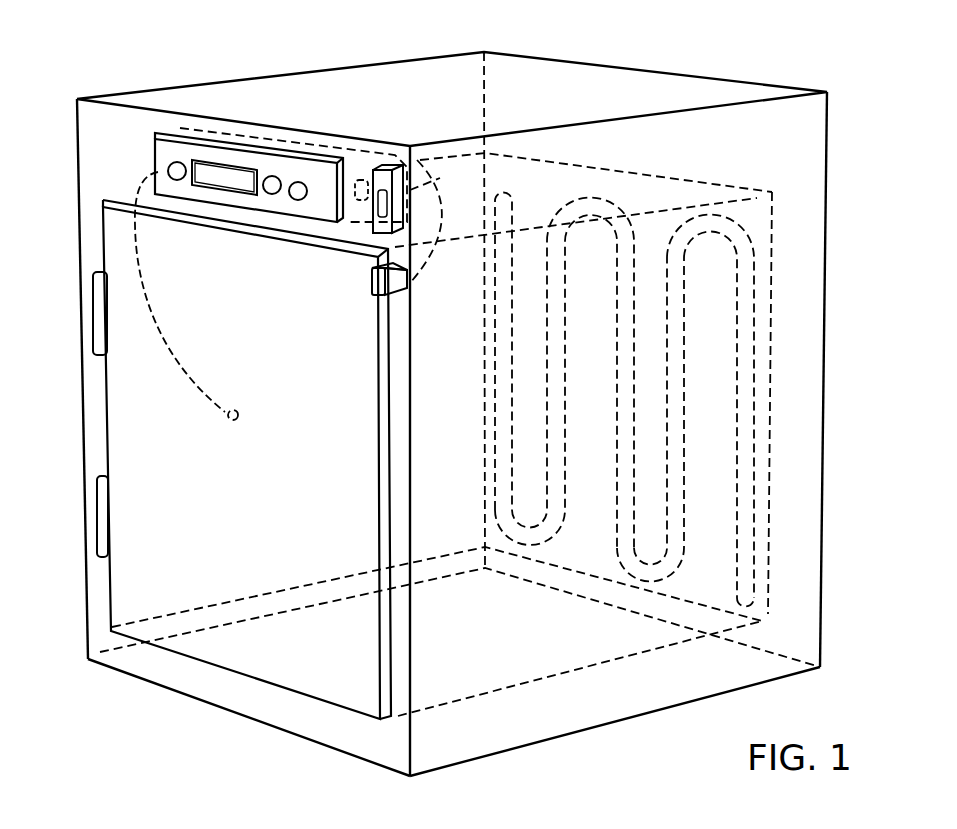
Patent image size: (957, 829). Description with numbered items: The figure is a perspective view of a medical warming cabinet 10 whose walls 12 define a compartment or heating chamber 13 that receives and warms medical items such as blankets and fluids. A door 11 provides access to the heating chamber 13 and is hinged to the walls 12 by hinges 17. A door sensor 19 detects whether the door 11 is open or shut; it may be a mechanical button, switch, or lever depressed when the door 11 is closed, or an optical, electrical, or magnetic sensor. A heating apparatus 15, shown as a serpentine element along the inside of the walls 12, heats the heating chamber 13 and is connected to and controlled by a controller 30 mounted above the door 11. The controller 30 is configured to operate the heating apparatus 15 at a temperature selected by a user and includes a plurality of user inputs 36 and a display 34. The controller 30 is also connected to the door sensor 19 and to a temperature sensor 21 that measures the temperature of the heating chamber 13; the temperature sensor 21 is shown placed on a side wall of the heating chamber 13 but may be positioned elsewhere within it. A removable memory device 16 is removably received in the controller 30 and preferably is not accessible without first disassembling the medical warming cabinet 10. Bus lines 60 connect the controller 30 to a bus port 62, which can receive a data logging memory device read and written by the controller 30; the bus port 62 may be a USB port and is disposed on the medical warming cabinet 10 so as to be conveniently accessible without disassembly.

The medical warming cabinet 10 is at (877, 112).
The door 11 is at (257, 652).
The walls 12 is at (821, 559).
The heating chamber 13 is at (162, 556).
The heating apparatus 15 is at (754, 418).
The removable memory device 16 is at (358, 174).
The hinges 17 is at (93, 313).
The door sensor 19 is at (368, 280).
The temperature sensor 21 is at (240, 427).
The controller 30 is at (283, 207).
The display 34 is at (226, 173).
The user inputs 36 is at (268, 177).
The bus lines 60 is at (442, 156).
The bus port 62 is at (376, 248).